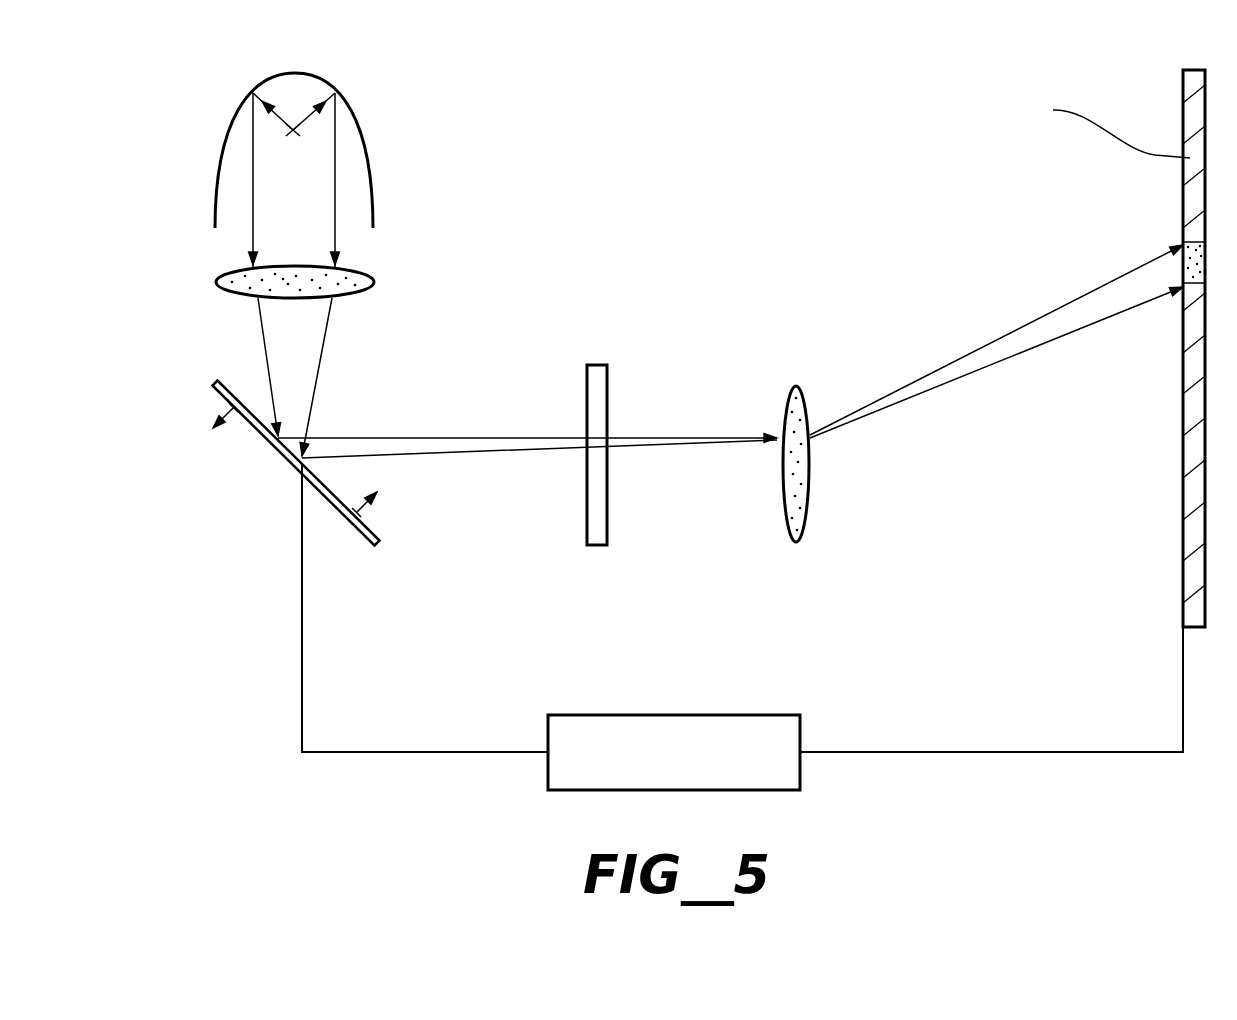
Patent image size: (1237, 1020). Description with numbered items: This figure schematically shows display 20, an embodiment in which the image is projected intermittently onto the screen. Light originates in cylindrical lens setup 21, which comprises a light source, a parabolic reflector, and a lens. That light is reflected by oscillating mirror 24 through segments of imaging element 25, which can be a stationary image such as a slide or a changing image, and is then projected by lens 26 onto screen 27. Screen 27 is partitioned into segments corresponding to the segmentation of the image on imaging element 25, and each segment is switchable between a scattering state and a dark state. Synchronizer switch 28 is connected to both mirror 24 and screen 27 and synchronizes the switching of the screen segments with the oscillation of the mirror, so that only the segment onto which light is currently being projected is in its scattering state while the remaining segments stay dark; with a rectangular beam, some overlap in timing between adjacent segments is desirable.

The display 20 is at (252, 711).
The cylindrical lens setup 21 is at (190, 262).
The oscillating mirror 24 is at (247, 428).
The imaging element 25 is at (588, 522).
The lens 26 is at (807, 515).
The screen 27 is at (1187, 550).
The synchronizer switch 28 is at (702, 715).